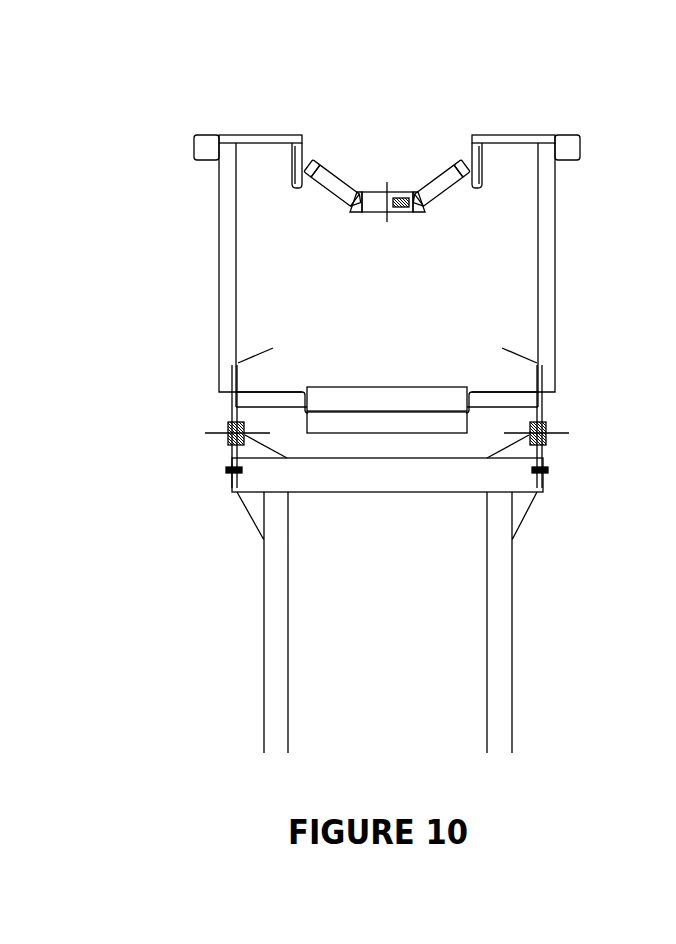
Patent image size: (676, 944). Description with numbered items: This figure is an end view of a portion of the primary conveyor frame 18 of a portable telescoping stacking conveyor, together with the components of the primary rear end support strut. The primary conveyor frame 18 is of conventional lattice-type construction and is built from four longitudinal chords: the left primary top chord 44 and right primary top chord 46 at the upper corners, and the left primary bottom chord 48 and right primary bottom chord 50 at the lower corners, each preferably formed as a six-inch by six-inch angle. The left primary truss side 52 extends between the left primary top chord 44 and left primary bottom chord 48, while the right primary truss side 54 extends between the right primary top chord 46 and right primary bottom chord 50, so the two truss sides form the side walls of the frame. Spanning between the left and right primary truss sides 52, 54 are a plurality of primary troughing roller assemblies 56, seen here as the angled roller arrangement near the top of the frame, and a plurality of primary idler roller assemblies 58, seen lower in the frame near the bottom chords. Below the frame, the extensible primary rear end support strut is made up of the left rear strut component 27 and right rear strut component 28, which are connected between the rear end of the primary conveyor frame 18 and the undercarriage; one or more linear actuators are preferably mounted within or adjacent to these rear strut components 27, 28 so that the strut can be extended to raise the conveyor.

The primary conveyor frame 18 is at (428, 88).
The left rear strut component 27 is at (276, 624).
The right rear strut component 28 is at (497, 611).
The left primary top chord 44 is at (242, 150).
The right primary top chord 46 is at (528, 152).
The left primary bottom chord 48 is at (250, 385).
The right primary bottom chord 50 is at (525, 385).
The left primary truss side 52 is at (216, 248).
The right primary truss side 54 is at (560, 233).
The primary troughing roller assembly 56 is at (375, 216).
The primary idler roller assembly 58 is at (376, 380).